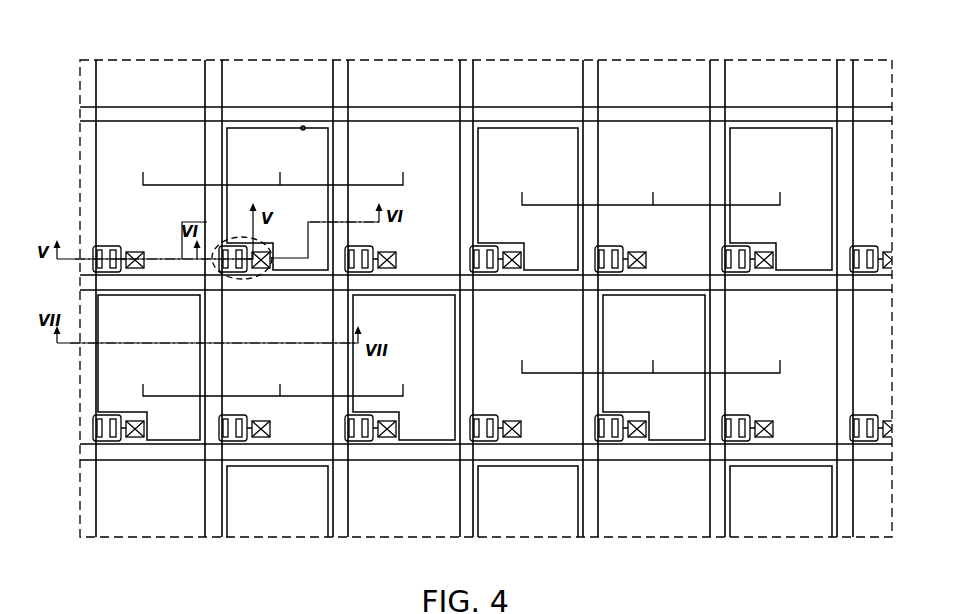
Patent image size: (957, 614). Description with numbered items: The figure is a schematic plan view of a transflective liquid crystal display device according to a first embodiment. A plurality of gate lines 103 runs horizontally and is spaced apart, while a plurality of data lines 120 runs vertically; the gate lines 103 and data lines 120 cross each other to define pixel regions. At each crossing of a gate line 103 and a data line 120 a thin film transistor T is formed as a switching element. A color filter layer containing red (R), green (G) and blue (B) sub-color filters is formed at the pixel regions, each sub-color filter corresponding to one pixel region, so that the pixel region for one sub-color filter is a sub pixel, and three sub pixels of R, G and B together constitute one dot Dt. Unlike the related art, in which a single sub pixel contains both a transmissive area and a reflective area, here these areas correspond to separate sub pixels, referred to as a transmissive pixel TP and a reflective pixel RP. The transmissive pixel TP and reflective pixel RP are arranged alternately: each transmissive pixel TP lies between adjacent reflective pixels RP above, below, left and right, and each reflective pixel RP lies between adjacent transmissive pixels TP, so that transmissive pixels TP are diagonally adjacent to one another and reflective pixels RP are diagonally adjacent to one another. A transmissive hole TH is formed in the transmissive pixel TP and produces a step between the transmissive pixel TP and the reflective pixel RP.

The data line 120 is at (214, 90).
The gate line 103 is at (367, 110).
The transmissive hole TH is at (303, 126).
The thin film transistor T is at (242, 282).
The transmissive pixel TP is at (465, 332).
The reflective pixel RP is at (460, 305).
The dot Dt is at (461, 292).
The green sub-color filter G is at (333, 269).
The blue sub-color filter B is at (466, 269).
The red sub-color filter R is at (591, 269).